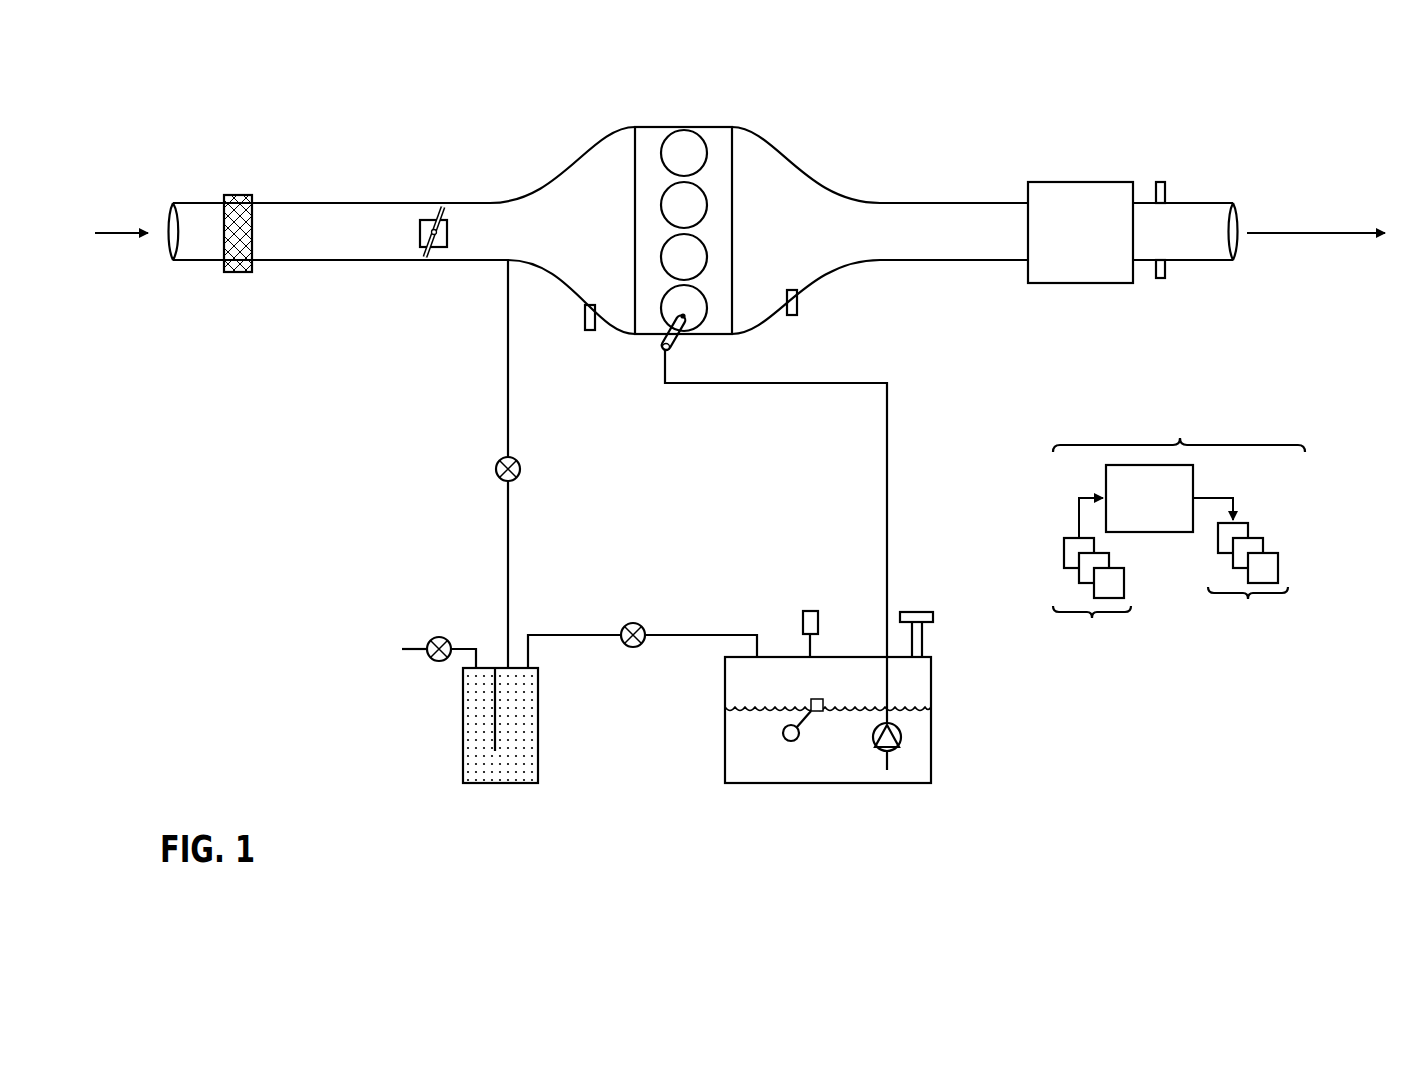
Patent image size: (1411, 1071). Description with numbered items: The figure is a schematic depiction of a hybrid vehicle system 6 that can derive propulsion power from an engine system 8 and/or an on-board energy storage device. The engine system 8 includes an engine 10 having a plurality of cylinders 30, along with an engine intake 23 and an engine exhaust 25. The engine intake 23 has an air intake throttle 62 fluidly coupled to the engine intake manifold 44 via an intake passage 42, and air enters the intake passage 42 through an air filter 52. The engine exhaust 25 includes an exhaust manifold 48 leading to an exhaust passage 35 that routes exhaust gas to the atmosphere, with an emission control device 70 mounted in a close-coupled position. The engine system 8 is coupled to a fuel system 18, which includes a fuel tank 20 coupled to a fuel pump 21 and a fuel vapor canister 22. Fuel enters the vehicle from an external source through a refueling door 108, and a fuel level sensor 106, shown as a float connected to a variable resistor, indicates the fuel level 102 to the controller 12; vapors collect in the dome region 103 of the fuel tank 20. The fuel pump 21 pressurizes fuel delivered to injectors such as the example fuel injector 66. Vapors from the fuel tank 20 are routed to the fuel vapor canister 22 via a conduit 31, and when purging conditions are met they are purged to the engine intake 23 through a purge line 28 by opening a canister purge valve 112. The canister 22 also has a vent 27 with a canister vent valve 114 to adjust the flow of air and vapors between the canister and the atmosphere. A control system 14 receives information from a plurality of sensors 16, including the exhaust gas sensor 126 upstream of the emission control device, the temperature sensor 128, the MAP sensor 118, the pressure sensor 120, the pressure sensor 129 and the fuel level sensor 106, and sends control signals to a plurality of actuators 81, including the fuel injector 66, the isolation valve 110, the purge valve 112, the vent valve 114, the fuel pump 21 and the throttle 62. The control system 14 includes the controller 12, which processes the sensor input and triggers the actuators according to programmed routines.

The hybrid vehicle system 6 is at (188, 104).
The engine system 8 is at (1268, 102).
The engine 10 is at (698, 230).
The controller 12 is at (1149, 498).
The control system 14 is at (1179, 525).
The sensors 16 is at (1092, 578).
The fuel system 18 is at (976, 806).
The fuel tank 20 is at (861, 685).
The fuel pump 21 is at (901, 740).
The fuel vapor canister 22 is at (525, 783).
The engine intake 23 is at (560, 152).
The engine exhaust 25 is at (846, 160).
The vent 27 is at (410, 649).
The purge line 28 is at (509, 427).
The cylinders 30 is at (703, 143).
The conduit 31 is at (682, 635).
The exhaust passage 35 is at (1212, 200).
The intake passage 42 is at (205, 261).
The engine intake manifold 44 is at (600, 242).
The exhaust manifold 48 is at (810, 242).
The air filter 52 is at (240, 194).
The air intake throttle 62 is at (447, 236).
The fuel injector 66 is at (680, 336).
The emission control device 70 is at (1079, 172).
The actuators 81 is at (1240, 571).
The fuel level 102 is at (837, 772).
The dome region 103 is at (780, 692).
The fuel level sensor 106 is at (825, 699).
The refueling door 108 is at (922, 612).
The isolation valve 110 is at (626, 625).
The canister purge valve 112 is at (519, 462).
The canister vent valve 114 is at (447, 641).
The MAP sensor 118 is at (585, 310).
The pressure sensor 120 is at (818, 622).
The exhaust gas sensor 126 is at (797, 300).
The temperature sensor 128 is at (1165, 278).
The pressure sensor 129 is at (1165, 188).